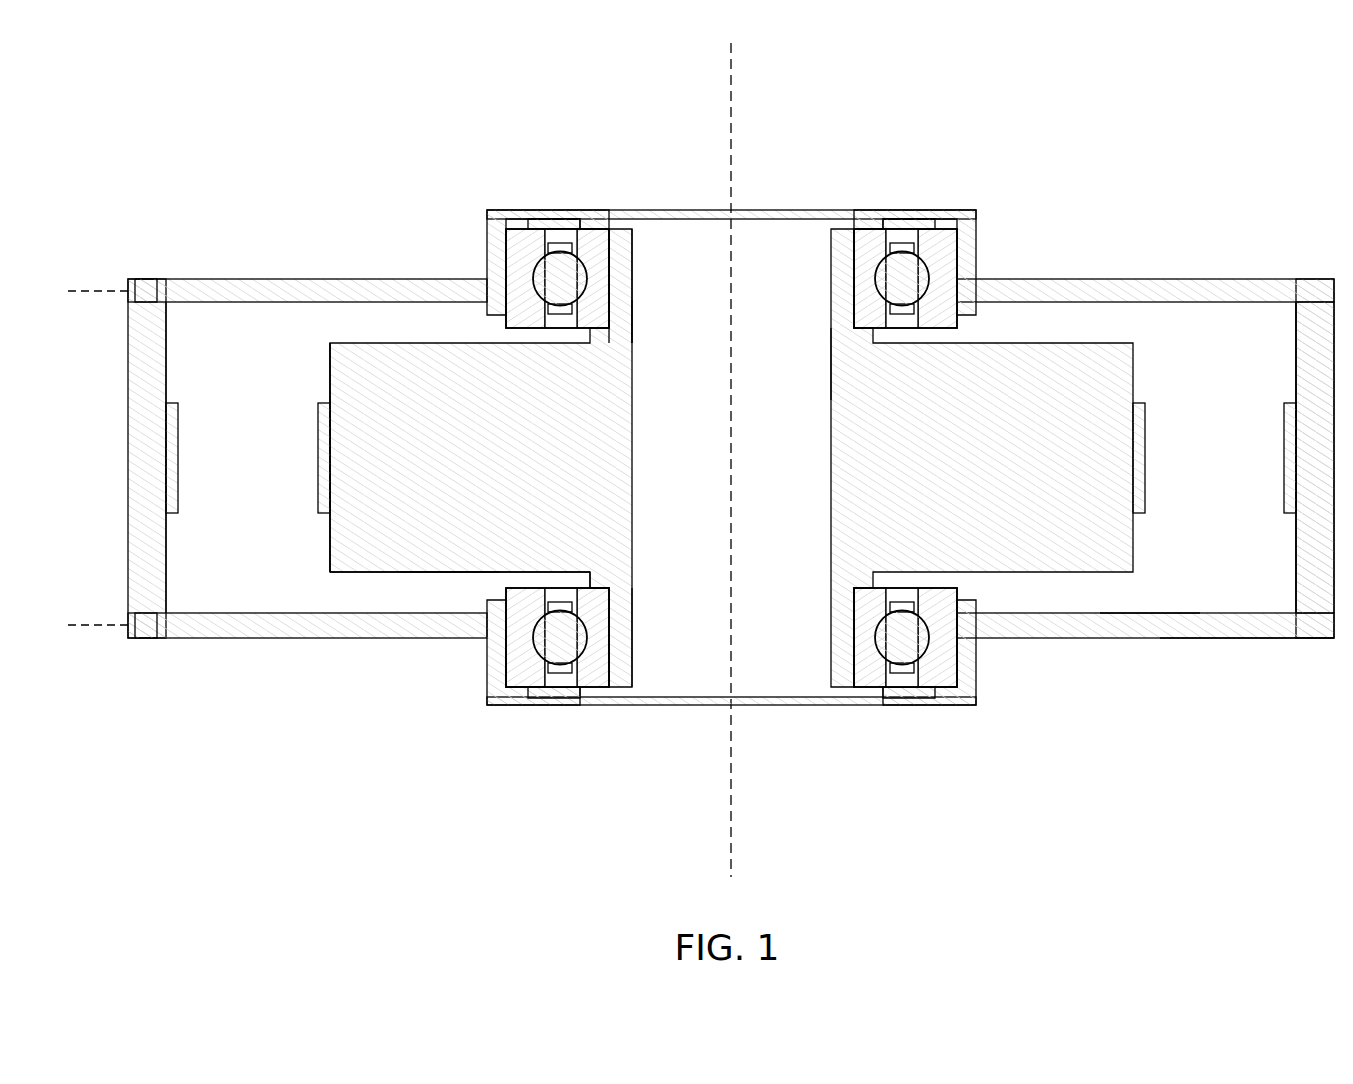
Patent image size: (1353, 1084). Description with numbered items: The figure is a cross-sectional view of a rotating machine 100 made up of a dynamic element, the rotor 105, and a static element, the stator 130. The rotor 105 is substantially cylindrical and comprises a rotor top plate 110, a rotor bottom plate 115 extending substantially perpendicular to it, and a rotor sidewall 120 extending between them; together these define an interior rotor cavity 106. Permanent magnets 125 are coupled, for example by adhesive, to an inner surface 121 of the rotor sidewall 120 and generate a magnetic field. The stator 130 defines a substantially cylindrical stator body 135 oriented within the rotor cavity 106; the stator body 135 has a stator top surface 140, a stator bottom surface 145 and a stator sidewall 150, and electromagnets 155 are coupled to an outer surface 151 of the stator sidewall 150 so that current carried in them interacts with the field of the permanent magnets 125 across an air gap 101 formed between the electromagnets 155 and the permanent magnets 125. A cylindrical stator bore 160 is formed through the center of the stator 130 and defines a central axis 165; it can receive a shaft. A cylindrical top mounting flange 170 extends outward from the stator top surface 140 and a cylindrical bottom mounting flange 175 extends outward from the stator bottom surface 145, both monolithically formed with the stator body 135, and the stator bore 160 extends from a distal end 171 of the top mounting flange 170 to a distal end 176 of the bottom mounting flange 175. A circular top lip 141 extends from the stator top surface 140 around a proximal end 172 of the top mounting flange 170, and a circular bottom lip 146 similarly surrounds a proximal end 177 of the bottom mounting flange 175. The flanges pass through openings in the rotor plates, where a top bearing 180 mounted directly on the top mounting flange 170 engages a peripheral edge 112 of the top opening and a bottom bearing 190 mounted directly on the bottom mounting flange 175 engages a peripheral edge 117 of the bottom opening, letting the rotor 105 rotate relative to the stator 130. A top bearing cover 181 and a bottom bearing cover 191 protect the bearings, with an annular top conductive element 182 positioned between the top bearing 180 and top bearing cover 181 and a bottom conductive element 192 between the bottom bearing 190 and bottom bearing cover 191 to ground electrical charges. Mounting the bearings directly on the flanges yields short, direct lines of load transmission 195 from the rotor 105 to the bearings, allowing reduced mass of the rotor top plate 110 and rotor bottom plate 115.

The rotating machine 100 is at (701, 460).
The air gap 101 is at (222, 592).
The rotor 105 is at (1231, 650).
The rotor cavity 106 is at (1151, 590).
The rotor top plate 110 is at (1276, 279).
The peripheral edge of the top opening 112 is at (948, 311).
The rotor bottom plate 115 is at (1123, 638).
The peripheral edge of the bottom opening 117 is at (954, 628).
The rotor sidewall 120 is at (1302, 358).
The inner surface of the rotor sidewall 121 is at (1293, 567).
The permanent magnets 125 is at (172, 440).
The stator 130 is at (356, 577).
The stator body 135 is at (447, 560).
The stator top surface 140 is at (385, 338).
The circular top lip 141 is at (855, 343).
The stator bottom surface 145 is at (1028, 573).
The circular bottom lip 146 is at (632, 575).
The stator sidewall 150 is at (340, 549).
The outer surface of the stator sidewall 151 is at (325, 362).
The electromagnets 155 is at (322, 478).
The stator bore 160 is at (756, 257).
The central axis 165 is at (731, 823).
The top mounting flange 170 is at (632, 283).
The distal end of the top mounting flange 171 is at (622, 235).
The proximal end of the top mounting flange 172 is at (632, 331).
The bottom mounting flange 175 is at (632, 655).
The distal end of the bottom mounting flange 176 is at (620, 681).
The proximal end of the bottom mounting flange 177 is at (632, 614).
The top bearing 180 is at (514, 233).
The top bearing cover 181 is at (957, 236).
The top conductive element 182 is at (893, 236).
The bottom bearing 190 is at (866, 681).
The bottom bearing cover 191 is at (966, 688).
The bottom conductive element 192 is at (556, 690).
The lines of load transmission 195 is at (100, 291).